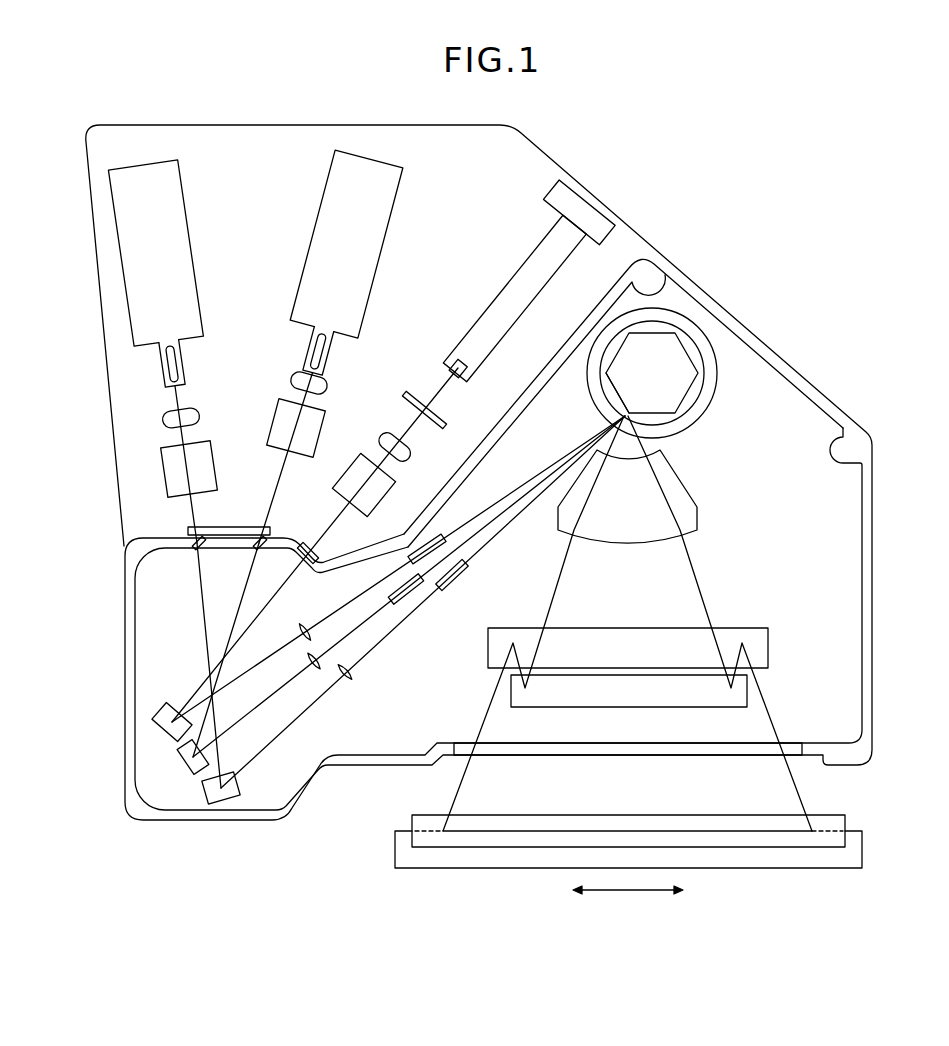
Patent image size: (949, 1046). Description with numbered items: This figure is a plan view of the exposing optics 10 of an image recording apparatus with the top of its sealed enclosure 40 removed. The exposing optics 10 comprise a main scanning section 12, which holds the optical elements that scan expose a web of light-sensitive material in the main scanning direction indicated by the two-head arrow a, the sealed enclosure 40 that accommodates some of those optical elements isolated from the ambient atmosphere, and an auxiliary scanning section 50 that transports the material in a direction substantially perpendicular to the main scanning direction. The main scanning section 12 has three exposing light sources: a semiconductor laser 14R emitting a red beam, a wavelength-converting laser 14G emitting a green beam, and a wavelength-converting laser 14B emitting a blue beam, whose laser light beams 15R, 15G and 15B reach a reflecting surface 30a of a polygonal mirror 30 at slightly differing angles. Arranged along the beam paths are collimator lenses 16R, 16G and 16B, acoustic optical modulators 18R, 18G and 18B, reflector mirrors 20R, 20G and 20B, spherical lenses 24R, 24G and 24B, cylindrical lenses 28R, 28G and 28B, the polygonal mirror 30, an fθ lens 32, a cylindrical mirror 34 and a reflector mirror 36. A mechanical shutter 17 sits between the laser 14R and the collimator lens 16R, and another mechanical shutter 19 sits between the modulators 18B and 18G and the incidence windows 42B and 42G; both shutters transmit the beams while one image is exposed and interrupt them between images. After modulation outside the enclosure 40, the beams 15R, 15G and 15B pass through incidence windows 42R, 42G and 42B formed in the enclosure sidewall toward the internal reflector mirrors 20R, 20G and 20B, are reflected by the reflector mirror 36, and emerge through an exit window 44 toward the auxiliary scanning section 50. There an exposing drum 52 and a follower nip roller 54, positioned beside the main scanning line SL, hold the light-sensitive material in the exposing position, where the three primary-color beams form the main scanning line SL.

The exposing optics 10 is at (451, 472).
The main scanning section 12 is at (142, 476).
The wavelength-converting laser (B-SHG) 14B is at (191, 250).
The wavelength-converting laser (G-SHG) 14G is at (322, 203).
The semiconductor laser (LD) 14R is at (499, 298).
The blue laser light beam 15B is at (192, 508).
The green laser light beam 15G is at (277, 483).
The red laser light beam 15R is at (243, 643).
The collimator lens 16B is at (193, 411).
The collimator lens 16G is at (295, 370).
The collimator lens 16R is at (410, 450).
The mechanical shutter 17 is at (440, 411).
The acoustic optical modulator (AOM) 18B is at (198, 448).
The acoustic optical modulator (AOM) 18G is at (352, 413).
The acoustic optical modulator (AOM) 18R is at (378, 494).
The mechanical shutter 19 is at (233, 526).
The reflector mirror 20R is at (162, 716).
The reflector mirror 20G is at (185, 764).
The reflector mirror 20B is at (232, 794).
The spherical lens 24R is at (304, 624).
The spherical lens 24G is at (316, 670).
The spherical lens 24B is at (352, 668).
The cylindrical lens 28R is at (445, 535).
The cylindrical lens 28G is at (424, 580).
The cylindrical lens 28B is at (467, 563).
The polygonal mirror 30 is at (681, 381).
The reflecting surface 30a is at (661, 415).
The fθ lens 32 is at (690, 503).
The cylindrical mirror 34 is at (742, 697).
The reflector mirror 36 is at (765, 639).
The sealed enclosure 40 is at (724, 313).
The incidence window 42R is at (310, 545).
The incidence window 42G is at (252, 552).
The incidence window 42B is at (197, 550).
The exit window 44 is at (715, 747).
The auxiliary scanning section 50 is at (667, 847).
The exposing drum 52 is at (850, 862).
The follower nip roller 54 is at (827, 815).
The main scanning line SL is at (587, 830).
The main scanning direction a is at (628, 903).